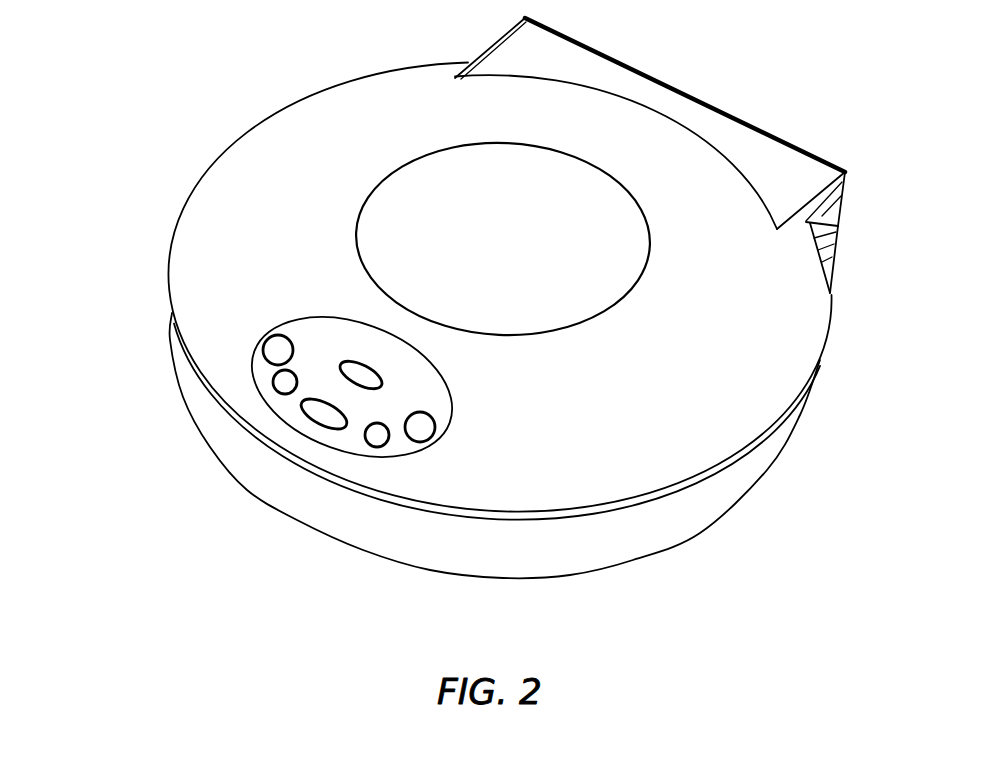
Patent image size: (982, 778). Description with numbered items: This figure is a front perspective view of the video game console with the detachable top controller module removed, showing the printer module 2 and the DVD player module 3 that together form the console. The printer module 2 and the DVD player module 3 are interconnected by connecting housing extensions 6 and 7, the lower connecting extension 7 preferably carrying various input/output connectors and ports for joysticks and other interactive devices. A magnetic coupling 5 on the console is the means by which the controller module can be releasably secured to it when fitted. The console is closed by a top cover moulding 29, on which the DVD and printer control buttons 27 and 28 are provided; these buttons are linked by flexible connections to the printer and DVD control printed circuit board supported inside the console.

The printer module 2 is at (775, 358).
The DVD player module 3 is at (622, 528).
The magnetic coupling 5 is at (412, 188).
The connecting housing extension 6 is at (837, 213).
The lower connecting extension 7 is at (832, 253).
The DVD control buttons 27 is at (352, 435).
The printer control buttons 28 is at (267, 403).
The top cover moulding 29 is at (222, 214).